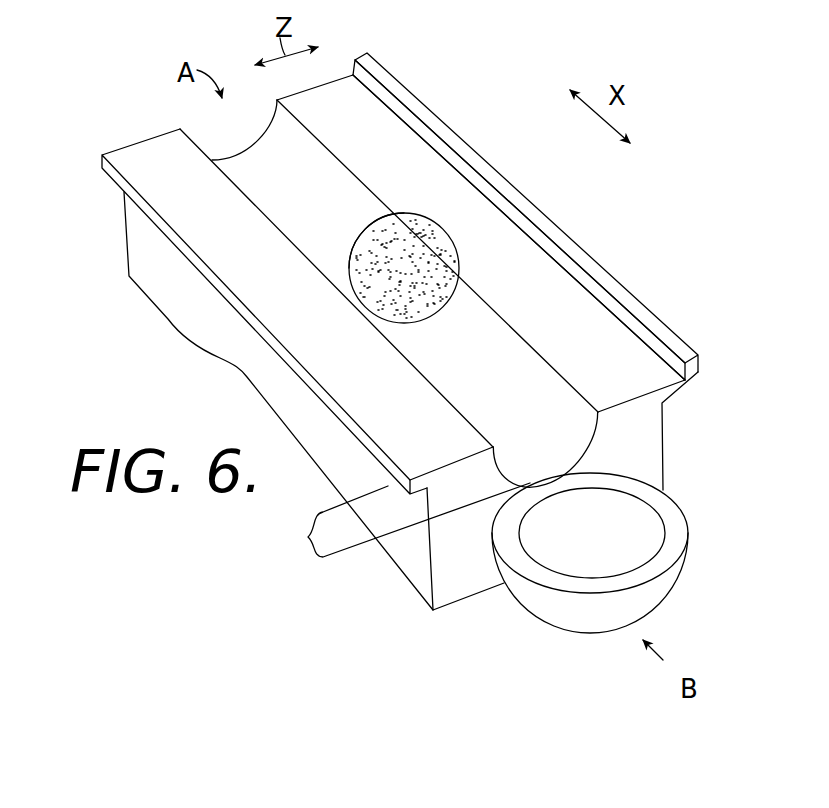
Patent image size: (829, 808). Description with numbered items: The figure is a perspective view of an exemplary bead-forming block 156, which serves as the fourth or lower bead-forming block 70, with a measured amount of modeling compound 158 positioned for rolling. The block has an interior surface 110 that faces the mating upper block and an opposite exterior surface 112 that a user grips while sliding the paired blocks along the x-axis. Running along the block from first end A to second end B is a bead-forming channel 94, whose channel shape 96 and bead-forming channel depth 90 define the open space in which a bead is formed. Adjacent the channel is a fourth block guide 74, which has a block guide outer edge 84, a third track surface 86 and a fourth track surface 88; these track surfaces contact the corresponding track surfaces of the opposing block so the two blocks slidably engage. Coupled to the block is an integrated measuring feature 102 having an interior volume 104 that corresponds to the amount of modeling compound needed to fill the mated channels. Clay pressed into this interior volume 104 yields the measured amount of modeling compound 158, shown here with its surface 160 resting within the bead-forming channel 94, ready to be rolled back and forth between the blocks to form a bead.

The fourth bead-forming block 70 is at (172, 324).
The fourth block guide 74 is at (702, 377).
The block guide outer edge 84 is at (670, 332).
The third track surface 86 is at (623, 387).
The fourth track surface 88 is at (458, 461).
The bead-forming channel depth 90 is at (308, 537).
The bead-forming channel 94 is at (506, 378).
The channel shape 96 is at (301, 184).
The integrated measuring feature 102 is at (660, 587).
The interior volume 104 is at (592, 565).
The interior surface 110 is at (410, 63).
The exterior surface 112 is at (335, 638).
The bead-forming block 156 is at (90, 135).
The measured amount of modeling compound 158 is at (432, 237).
The surface 160 is at (350, 255).